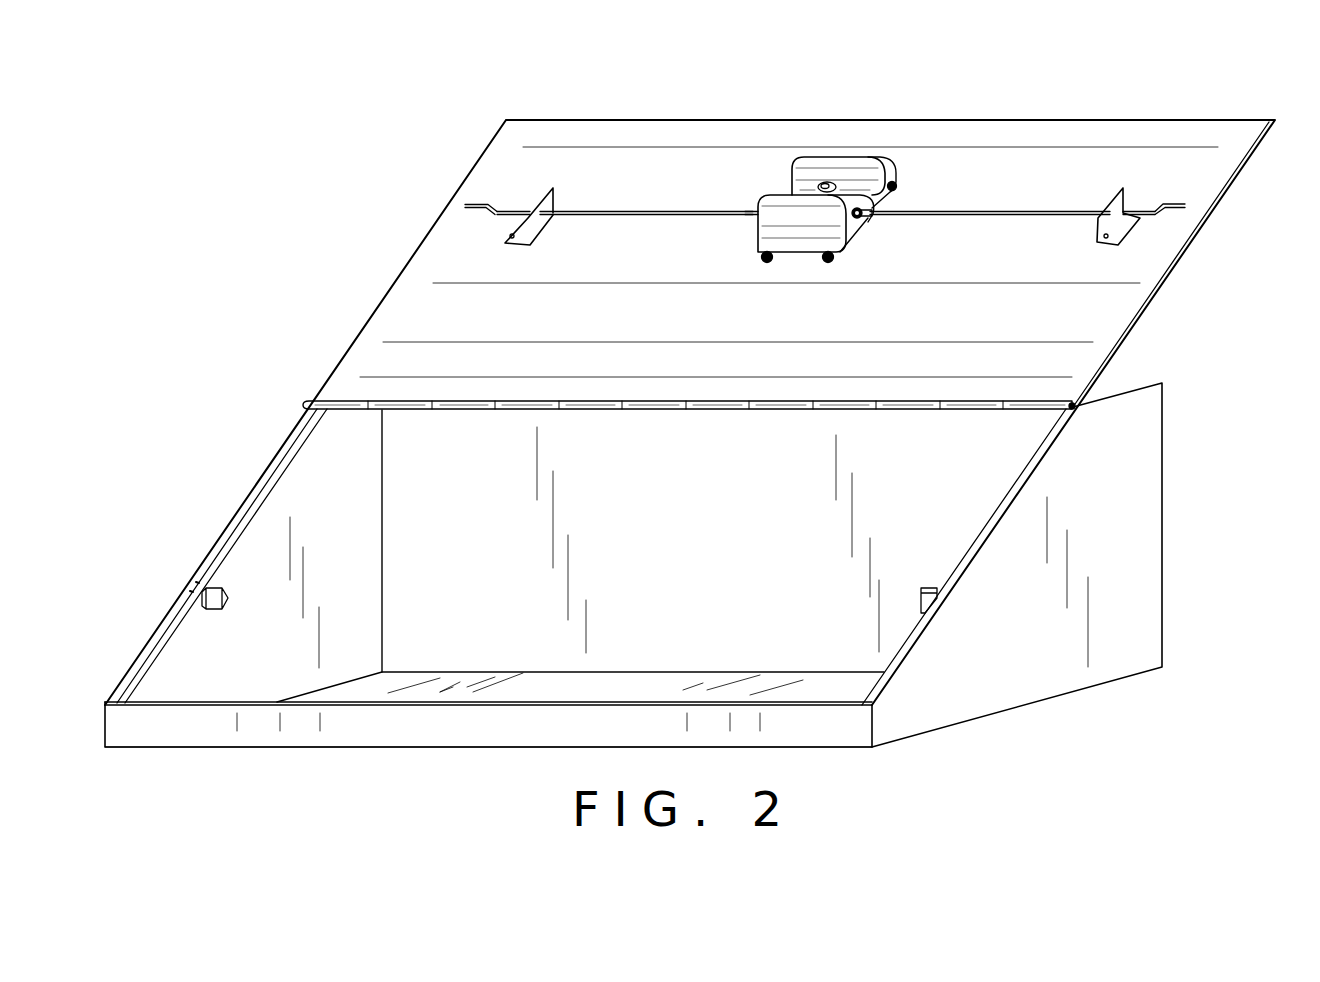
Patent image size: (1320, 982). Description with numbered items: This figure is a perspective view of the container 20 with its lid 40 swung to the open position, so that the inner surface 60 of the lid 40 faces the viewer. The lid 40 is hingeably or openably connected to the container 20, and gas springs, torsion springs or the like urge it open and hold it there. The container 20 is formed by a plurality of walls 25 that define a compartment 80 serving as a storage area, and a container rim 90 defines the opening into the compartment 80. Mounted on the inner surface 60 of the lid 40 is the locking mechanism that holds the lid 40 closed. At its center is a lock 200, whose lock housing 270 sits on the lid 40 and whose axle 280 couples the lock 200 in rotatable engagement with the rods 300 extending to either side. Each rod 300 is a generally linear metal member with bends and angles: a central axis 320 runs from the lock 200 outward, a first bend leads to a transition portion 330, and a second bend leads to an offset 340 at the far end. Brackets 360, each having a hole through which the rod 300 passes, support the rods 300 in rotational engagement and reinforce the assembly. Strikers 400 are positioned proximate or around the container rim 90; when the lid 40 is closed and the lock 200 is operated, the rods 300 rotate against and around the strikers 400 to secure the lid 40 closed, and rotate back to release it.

The container 20 is at (1120, 693).
The walls 25 is at (1142, 500).
The lid 40 is at (1177, 287).
The inner surface 60 is at (1203, 157).
The compartment 80 is at (427, 535).
The container rim 90 is at (902, 671).
The lock 200 is at (825, 140).
The lock housing 270 is at (863, 163).
The axle 280 is at (868, 212).
The rods 300 is at (633, 207).
The central axis 320 is at (702, 212).
The transition portion 330 is at (525, 160).
The offset 340 is at (480, 202).
The brackets 360 is at (552, 203).
The strikers 400 is at (215, 590).